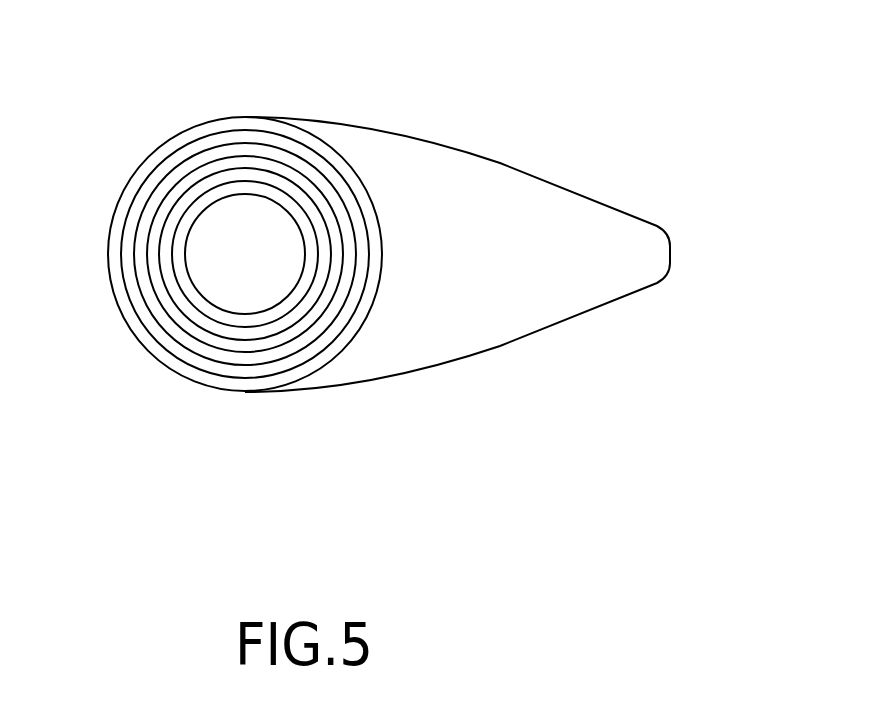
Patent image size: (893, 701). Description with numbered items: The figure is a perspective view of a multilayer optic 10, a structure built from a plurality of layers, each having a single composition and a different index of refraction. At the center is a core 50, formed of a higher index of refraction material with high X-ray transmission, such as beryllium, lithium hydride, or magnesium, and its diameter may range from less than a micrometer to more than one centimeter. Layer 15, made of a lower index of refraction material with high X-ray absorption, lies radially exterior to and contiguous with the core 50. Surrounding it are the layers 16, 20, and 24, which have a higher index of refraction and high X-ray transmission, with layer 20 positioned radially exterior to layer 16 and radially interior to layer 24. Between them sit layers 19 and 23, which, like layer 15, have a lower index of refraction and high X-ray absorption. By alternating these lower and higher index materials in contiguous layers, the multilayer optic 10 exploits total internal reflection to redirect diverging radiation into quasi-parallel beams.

The multilayer optic 10 is at (594, 72).
The layer 15 is at (250, 190).
The layer 16 is at (293, 190).
The layer 19 is at (332, 220).
The layer 20 is at (350, 268).
The layer 23 is at (337, 330).
The layer 24 is at (240, 383).
The core 50 is at (271, 268).